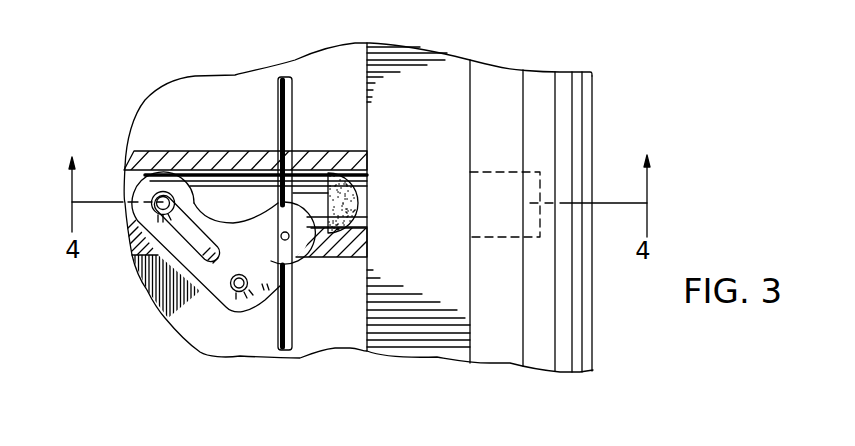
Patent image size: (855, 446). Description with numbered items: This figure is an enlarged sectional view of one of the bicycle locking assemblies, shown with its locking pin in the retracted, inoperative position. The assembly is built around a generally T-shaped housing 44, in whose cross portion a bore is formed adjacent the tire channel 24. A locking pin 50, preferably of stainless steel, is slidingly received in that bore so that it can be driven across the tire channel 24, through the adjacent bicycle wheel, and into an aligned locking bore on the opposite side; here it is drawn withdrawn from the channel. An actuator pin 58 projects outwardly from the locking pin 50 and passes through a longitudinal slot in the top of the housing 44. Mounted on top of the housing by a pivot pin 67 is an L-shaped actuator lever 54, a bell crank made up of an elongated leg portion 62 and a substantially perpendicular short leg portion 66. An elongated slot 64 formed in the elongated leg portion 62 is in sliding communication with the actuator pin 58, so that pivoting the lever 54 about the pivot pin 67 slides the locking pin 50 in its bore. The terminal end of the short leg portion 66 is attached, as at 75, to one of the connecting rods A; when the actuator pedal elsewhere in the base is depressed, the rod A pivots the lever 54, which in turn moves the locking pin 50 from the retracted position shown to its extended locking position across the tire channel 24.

The tire channel 24 is at (442, 112).
The housing 44 is at (152, 156).
The locking pin 50 is at (243, 182).
The actuator lever 54 is at (208, 278).
The actuator pin 58 is at (150, 215).
The elongated leg portion 62 is at (175, 242).
The elongated slot 64 is at (190, 193).
The short leg portion 66 is at (270, 290).
The pivot pin 67 is at (233, 293).
The connection of connecting rod to short leg 75 is at (303, 268).
The connecting rod A is at (293, 108).